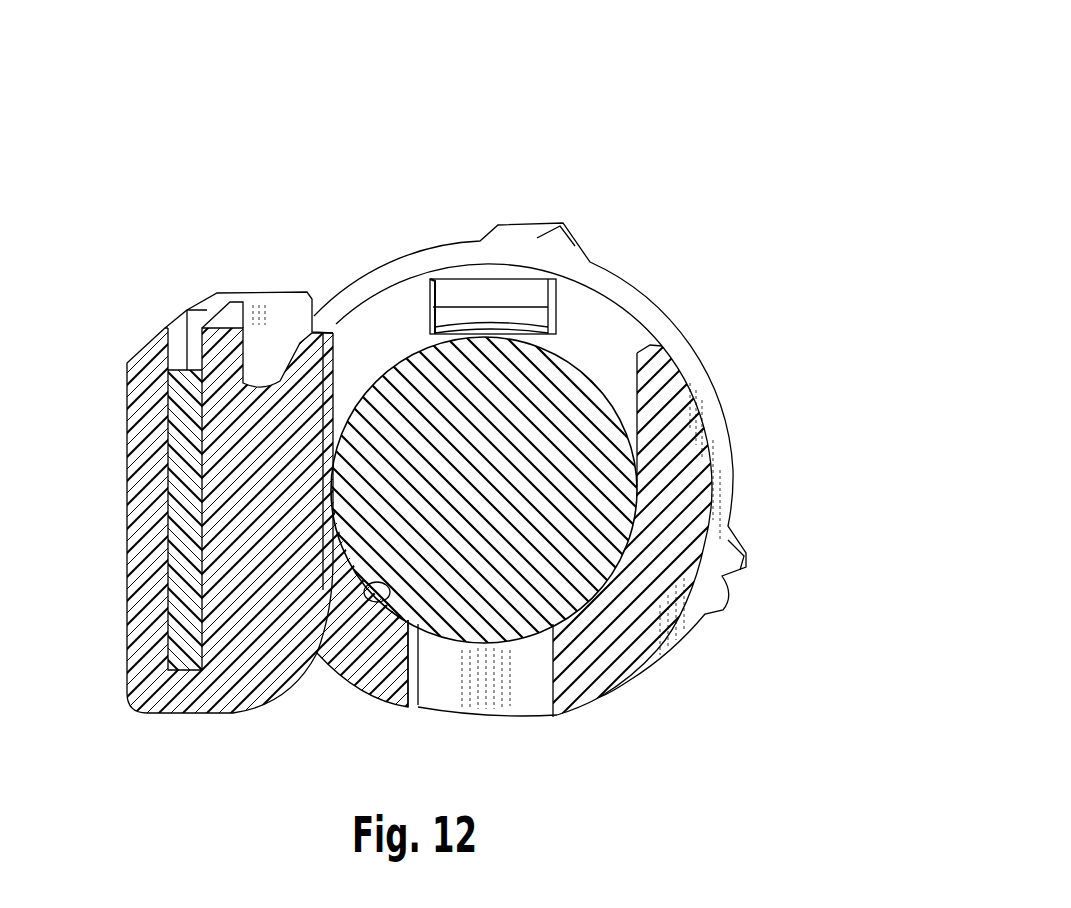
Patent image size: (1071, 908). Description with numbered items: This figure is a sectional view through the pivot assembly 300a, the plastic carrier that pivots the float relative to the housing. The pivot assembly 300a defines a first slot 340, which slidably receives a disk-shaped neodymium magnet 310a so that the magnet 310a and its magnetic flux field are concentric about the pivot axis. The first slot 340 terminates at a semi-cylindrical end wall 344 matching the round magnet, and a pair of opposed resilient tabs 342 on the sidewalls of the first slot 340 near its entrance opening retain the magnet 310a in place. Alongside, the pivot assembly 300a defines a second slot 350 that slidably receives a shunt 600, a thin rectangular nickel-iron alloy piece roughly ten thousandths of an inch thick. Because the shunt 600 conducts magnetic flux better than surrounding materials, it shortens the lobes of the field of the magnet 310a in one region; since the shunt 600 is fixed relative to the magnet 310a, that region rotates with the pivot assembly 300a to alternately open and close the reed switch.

The pivot assembly 300a is at (688, 138).
The magnet 310a is at (597, 380).
The first slot 340 is at (594, 335).
The resilient tabs 342 is at (470, 290).
The semi-cylindrical end wall 344 is at (363, 585).
The second slot 350 is at (247, 305).
The shunt 600 is at (178, 548).